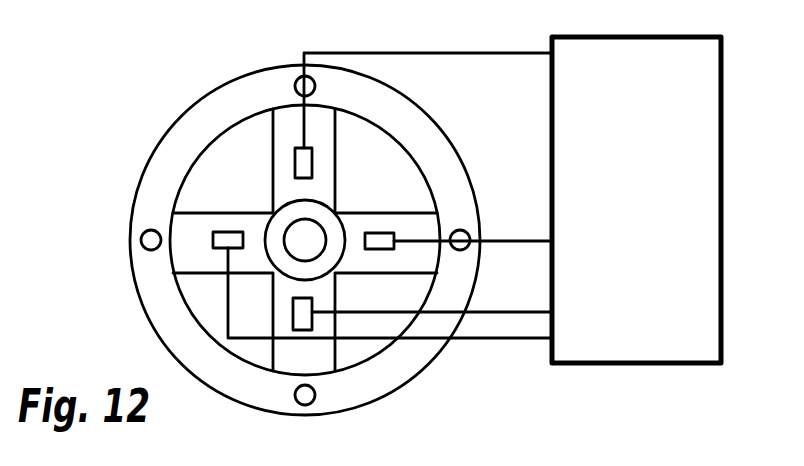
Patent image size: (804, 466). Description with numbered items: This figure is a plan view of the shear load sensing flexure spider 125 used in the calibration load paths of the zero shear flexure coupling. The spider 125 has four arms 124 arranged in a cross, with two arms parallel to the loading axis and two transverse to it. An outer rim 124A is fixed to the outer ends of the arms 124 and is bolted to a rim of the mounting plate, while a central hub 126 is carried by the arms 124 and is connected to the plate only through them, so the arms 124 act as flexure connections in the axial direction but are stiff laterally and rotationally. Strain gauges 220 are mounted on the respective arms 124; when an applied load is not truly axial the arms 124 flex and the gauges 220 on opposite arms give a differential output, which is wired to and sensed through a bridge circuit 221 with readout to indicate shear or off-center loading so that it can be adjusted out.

The outer rim 124A is at (197, 114).
The flexure spider 125 is at (168, 168).
The arms 124 is at (332, 157).
The central hub 126 is at (328, 262).
The strain gauges 220 is at (296, 161).
The bridge circuit 221 is at (653, 53).